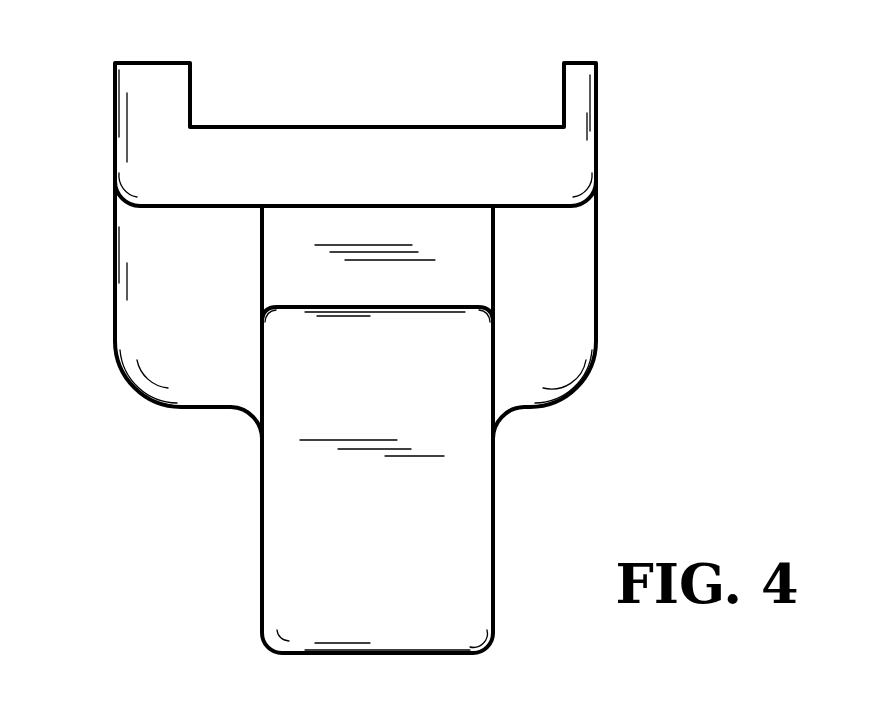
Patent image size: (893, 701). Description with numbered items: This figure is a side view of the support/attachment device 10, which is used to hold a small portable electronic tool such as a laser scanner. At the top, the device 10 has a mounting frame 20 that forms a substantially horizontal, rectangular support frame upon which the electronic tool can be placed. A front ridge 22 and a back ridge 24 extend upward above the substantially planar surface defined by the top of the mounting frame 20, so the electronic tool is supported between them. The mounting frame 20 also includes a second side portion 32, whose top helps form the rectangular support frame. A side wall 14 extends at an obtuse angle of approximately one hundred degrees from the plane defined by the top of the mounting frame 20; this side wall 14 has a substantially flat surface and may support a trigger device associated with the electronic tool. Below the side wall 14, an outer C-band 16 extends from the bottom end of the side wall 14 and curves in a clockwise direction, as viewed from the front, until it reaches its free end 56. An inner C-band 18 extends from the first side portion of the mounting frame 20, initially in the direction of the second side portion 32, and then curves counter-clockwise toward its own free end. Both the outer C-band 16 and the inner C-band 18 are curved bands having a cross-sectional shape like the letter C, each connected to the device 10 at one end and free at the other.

The support/attachment device 10 is at (172, 463).
The side wall 14 is at (158, 318).
The outer C-band 16 is at (287, 575).
The inner C-band 18 is at (442, 233).
The mounting frame 20 is at (423, 125).
The front ridge 22 is at (578, 62).
The back ridge 24 is at (148, 62).
The second side portion 32 is at (330, 157).
The free end 56 is at (363, 305).